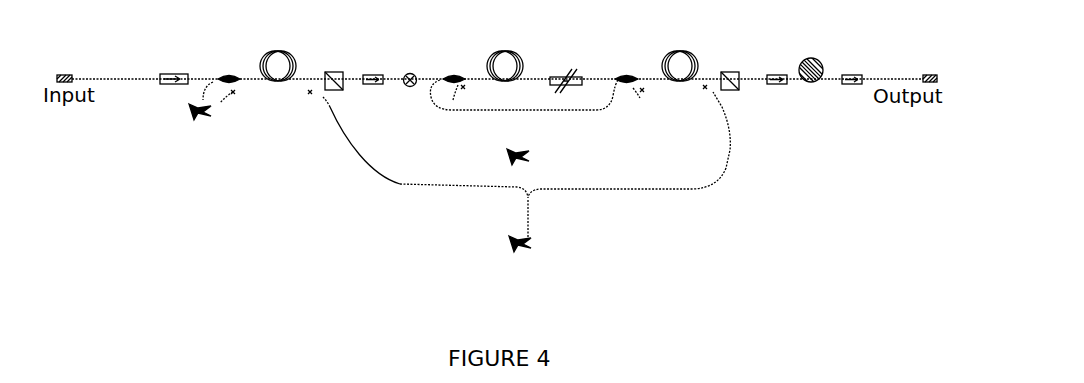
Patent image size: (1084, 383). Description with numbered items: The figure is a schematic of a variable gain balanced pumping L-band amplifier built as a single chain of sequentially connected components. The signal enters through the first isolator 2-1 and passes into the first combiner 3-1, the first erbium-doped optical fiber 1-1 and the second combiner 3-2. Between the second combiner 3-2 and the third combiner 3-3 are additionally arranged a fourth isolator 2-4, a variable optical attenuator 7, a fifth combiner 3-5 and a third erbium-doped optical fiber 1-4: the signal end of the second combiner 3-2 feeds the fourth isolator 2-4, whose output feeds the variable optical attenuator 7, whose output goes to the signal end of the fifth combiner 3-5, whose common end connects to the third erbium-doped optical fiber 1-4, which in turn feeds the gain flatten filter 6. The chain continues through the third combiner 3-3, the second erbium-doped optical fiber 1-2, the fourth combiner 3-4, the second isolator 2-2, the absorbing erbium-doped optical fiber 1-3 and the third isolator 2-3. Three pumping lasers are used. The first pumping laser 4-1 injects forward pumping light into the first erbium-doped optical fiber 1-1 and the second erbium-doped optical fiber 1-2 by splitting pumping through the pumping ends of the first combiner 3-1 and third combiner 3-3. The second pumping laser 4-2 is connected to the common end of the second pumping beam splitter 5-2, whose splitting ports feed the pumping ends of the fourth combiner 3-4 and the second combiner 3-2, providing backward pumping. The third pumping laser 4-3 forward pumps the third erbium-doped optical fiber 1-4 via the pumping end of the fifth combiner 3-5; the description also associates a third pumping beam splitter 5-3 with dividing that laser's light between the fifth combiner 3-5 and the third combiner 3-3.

The first erbium-doped optical fiber 1-1 is at (287, 43).
The second erbium-doped optical fiber 1-2 is at (675, 52).
The absorbing erbium-doped optical fiber 1-3 is at (813, 59).
The third erbium-doped optical fiber 1-4 is at (508, 52).
The first isolator 2-1 is at (165, 74).
The second isolator 2-2 is at (780, 69).
The third isolator 2-3 is at (853, 77).
The fourth isolator 2-4 is at (380, 66).
The first combiner 3-1 is at (233, 66).
The second combiner 3-2 is at (343, 63).
The third combiner 3-3 is at (630, 68).
The fourth combiner 3-4 is at (737, 63).
The fifth combiner 3-5 is at (457, 66).
The first pumping laser 4-1 is at (199, 121).
The second pumping laser 4-2 is at (533, 249).
The third pumping laser 4-3 is at (530, 163).
The second pumping beam splitter 5-2 is at (530, 205).
The third pumping beam splitter 5-3 is at (521, 111).
The gain flatten filter 6 is at (572, 73).
The variable optical attenuator 7 is at (412, 74).